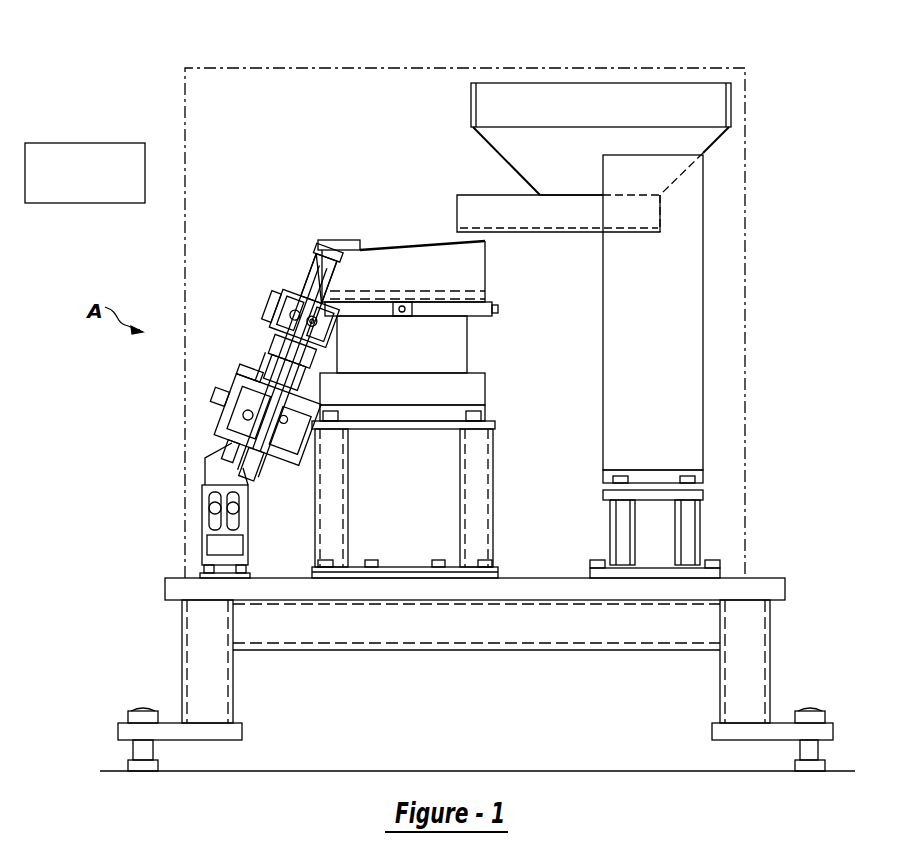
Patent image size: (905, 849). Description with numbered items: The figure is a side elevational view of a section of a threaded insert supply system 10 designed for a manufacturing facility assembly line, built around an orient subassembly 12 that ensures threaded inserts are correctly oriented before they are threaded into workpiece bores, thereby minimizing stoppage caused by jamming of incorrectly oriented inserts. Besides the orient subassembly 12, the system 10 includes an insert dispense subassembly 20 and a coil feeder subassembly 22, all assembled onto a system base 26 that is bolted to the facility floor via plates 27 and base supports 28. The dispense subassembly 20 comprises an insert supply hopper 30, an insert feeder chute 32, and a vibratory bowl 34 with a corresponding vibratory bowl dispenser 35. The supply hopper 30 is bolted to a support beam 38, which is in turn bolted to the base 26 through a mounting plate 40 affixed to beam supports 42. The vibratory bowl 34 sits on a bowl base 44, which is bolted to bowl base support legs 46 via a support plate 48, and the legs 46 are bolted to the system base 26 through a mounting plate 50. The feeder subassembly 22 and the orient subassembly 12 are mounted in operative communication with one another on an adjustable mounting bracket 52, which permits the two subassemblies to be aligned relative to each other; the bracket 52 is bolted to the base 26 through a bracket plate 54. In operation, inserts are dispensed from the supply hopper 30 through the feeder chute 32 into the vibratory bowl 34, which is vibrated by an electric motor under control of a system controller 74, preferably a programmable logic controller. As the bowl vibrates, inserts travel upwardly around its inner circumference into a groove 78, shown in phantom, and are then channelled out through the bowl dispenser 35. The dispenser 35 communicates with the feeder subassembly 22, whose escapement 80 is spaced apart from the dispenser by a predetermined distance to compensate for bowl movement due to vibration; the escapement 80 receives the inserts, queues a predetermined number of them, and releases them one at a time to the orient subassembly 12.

The threaded insert supply system 10 is at (760, 150).
The orient subassembly 12 is at (228, 401).
The insert dispense subassembly 20 is at (310, 200).
The coil feeder subassembly 22 is at (308, 302).
The system base 26 is at (484, 582).
The plates 27 is at (232, 733).
The base supports 28 is at (205, 690).
The insert supply hopper 30 is at (606, 95).
The insert feeder chute 32 is at (464, 198).
The vibratory bowl 34 is at (466, 262).
The vibratory bowl dispenser 35 is at (340, 243).
The support beam 38 is at (688, 330).
The mounting plate 40 is at (718, 562).
The beam supports 42 is at (625, 528).
The bowl base 44 is at (458, 343).
The bowl base support legs 46 is at (330, 487).
The support plate 48 is at (470, 385).
The mounting plate 50 is at (367, 576).
The mounting bracket 52 is at (210, 473).
The bracket plate 54 is at (208, 575).
The system controller 74 is at (85, 204).
The groove 78 is at (392, 245).
The escapement 80 is at (326, 268).